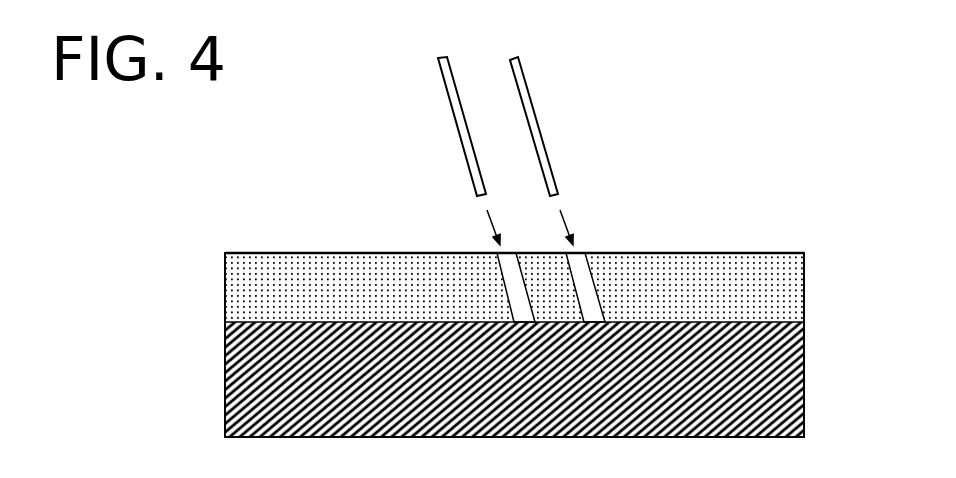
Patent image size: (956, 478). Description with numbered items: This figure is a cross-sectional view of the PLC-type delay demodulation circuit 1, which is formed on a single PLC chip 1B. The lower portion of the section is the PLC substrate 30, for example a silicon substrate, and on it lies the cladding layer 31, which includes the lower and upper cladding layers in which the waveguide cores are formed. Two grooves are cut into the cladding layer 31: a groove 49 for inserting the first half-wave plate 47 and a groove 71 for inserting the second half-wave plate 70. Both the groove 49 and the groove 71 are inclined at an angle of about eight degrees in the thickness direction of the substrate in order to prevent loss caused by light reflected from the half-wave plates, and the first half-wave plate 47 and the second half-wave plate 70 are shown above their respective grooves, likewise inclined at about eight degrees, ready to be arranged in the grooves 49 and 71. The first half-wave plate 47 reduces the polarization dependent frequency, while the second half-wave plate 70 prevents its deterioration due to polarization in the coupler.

The PLC-type delay demodulation circuit 1 is at (542, 312).
The PLC chip 1B is at (190, 312).
The PLC substrate 30 is at (785, 362).
The cladding layer 31 is at (783, 265).
The first half-wave plate 47 is at (448, 124).
The groove 49 is at (488, 247).
The second half-wave plate 70 is at (547, 130).
The groove 71 is at (580, 248).